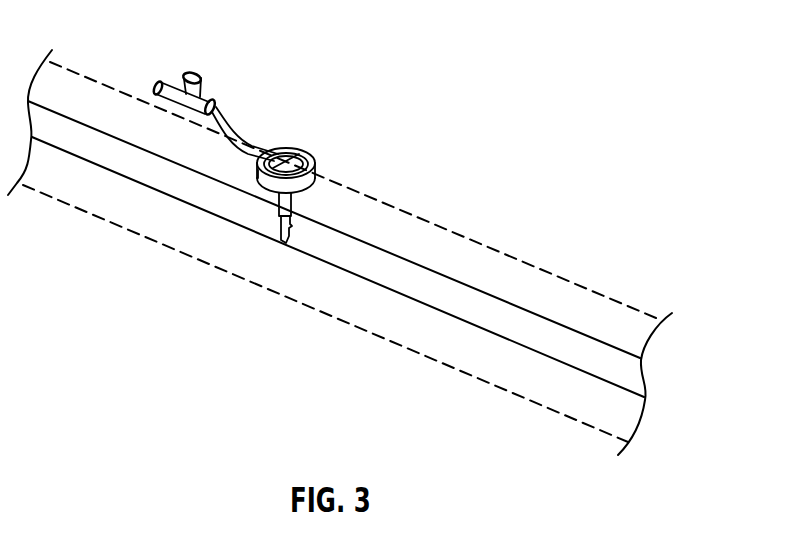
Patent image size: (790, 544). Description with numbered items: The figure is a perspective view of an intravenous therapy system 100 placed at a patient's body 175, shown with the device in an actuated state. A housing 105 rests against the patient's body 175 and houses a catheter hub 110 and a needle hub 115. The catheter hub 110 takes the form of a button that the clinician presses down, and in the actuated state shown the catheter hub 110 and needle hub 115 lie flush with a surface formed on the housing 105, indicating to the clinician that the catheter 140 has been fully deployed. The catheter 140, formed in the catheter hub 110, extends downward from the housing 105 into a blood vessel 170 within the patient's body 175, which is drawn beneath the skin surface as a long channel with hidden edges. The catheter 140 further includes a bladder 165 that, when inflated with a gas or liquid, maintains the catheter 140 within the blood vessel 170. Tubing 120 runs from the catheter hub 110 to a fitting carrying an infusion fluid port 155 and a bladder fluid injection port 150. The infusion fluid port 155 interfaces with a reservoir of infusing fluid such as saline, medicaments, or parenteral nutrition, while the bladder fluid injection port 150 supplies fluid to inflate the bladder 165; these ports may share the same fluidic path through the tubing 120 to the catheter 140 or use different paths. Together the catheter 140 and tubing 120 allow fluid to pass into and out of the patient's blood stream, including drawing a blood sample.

The intravenous therapy system 100 is at (330, 114).
The housing 105 is at (270, 185).
The catheter hub 110 is at (287, 153).
The needle hub 115 is at (300, 155).
The tubing 120 is at (240, 136).
The catheter 140 is at (307, 203).
The bladder fluid injection port 150 is at (197, 75).
The infusion fluid port 155 is at (175, 83).
The bladder 165 is at (285, 240).
The blood vessel 170 is at (583, 347).
The patient's body 175 is at (550, 288).